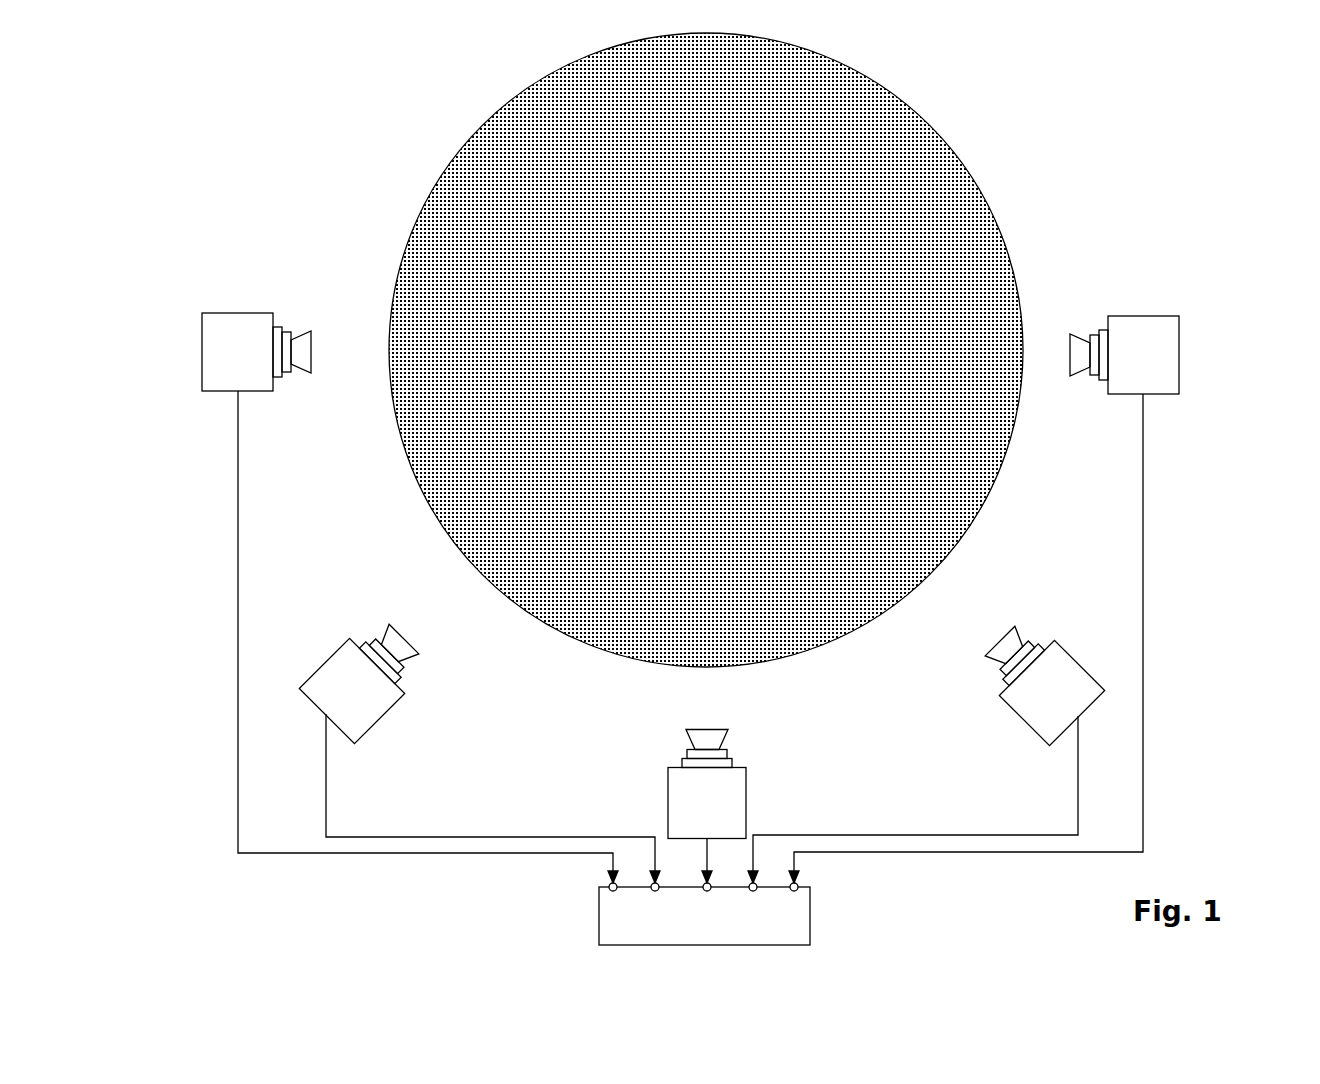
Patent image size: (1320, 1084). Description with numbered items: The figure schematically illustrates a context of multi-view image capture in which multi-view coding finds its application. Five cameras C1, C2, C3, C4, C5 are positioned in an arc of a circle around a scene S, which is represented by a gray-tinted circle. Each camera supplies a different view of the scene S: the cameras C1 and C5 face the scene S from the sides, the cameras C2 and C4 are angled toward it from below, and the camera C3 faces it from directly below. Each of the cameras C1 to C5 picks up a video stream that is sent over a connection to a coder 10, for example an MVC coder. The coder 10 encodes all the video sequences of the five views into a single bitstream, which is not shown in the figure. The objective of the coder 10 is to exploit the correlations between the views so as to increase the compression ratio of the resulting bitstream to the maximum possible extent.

The scene S is at (1022, 350).
The camera C1 is at (202, 353).
The camera C2 is at (326, 714).
The camera C3 is at (668, 804).
The camera C4 is at (1025, 720).
The camera C5 is at (1179, 355).
The coder 10 is at (810, 915).